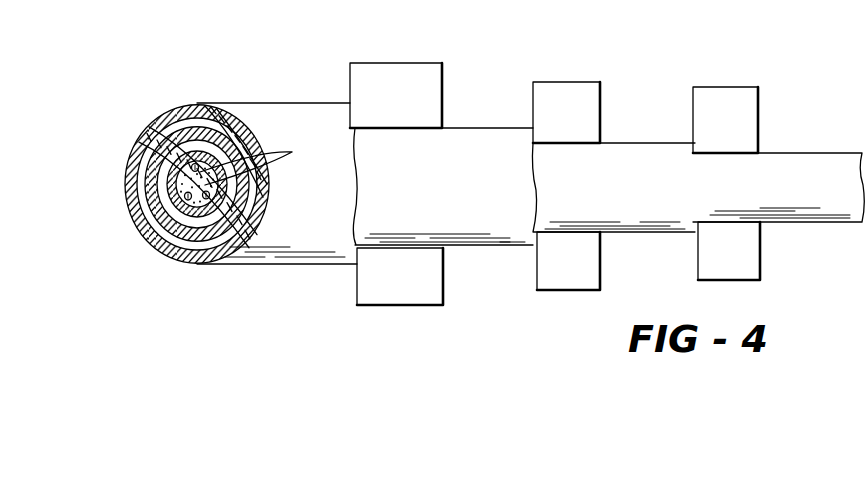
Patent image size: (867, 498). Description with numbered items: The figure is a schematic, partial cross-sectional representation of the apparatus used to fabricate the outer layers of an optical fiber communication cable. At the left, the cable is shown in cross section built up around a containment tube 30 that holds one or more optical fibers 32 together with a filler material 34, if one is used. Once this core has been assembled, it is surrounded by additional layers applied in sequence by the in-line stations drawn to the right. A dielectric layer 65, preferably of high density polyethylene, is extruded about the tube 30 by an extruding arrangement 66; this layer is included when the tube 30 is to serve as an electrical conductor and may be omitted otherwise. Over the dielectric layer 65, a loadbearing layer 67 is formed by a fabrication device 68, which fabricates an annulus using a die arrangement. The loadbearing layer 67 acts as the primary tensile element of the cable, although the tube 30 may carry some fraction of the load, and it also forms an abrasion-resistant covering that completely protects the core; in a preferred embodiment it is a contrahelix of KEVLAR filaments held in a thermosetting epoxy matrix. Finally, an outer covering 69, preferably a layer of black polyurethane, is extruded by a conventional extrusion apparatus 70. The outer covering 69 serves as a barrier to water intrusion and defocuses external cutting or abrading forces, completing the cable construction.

The containment tube 30 is at (173, 262).
The optical fibers 32 is at (246, 174).
The filler material 34 is at (124, 192).
The dielectric layer 65 is at (146, 138).
The extruding arrangement 66 is at (758, 110).
The loadbearing layer 67 is at (197, 103).
The fabrication device 68 is at (600, 98).
The outer covering 69 is at (206, 268).
The extrusion apparatus 70 is at (442, 78).